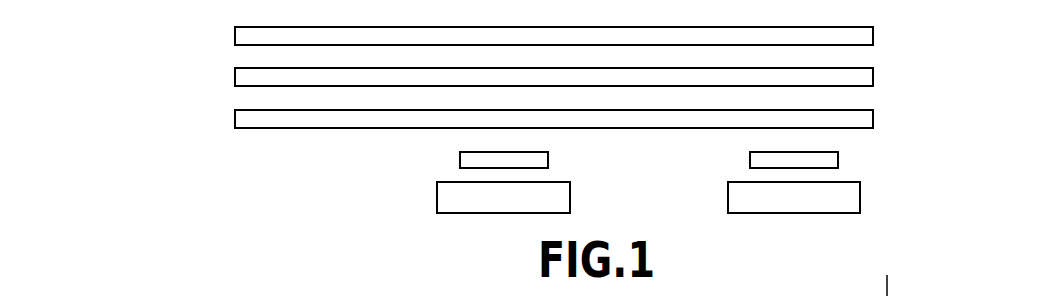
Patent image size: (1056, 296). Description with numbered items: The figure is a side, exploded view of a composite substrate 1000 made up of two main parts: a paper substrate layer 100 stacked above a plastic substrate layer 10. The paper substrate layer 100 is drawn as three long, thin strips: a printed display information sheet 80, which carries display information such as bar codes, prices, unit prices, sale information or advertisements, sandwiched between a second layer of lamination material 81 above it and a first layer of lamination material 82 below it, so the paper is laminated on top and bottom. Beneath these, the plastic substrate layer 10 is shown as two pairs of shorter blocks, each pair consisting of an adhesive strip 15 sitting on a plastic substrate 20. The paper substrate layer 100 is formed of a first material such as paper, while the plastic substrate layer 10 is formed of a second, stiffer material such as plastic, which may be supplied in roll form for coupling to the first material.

The composite substrate 1000 is at (599, 118).
The paper substrate layer 100 is at (552, 73).
The second layer of lamination material 81 is at (235, 38).
The printed display information sheet 80 is at (235, 79).
The first layer of lamination material 82 is at (235, 121).
The plastic substrate layer 10 is at (646, 184).
The adhesive strip 15 is at (460, 160).
The plastic substrate 20 is at (437, 203).